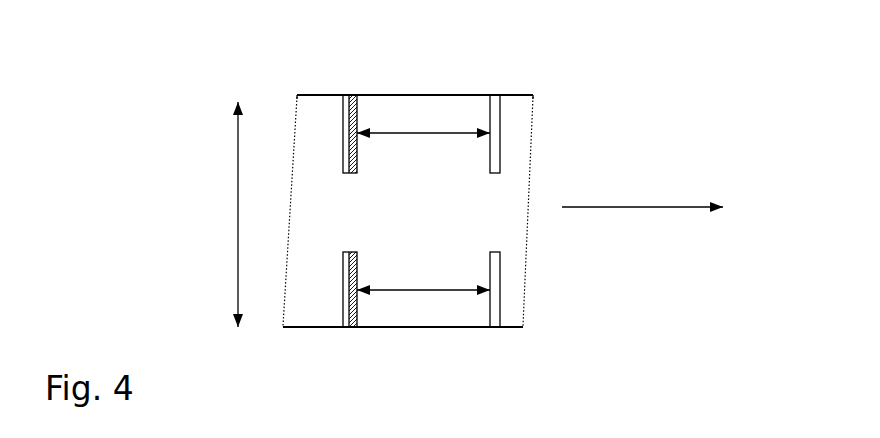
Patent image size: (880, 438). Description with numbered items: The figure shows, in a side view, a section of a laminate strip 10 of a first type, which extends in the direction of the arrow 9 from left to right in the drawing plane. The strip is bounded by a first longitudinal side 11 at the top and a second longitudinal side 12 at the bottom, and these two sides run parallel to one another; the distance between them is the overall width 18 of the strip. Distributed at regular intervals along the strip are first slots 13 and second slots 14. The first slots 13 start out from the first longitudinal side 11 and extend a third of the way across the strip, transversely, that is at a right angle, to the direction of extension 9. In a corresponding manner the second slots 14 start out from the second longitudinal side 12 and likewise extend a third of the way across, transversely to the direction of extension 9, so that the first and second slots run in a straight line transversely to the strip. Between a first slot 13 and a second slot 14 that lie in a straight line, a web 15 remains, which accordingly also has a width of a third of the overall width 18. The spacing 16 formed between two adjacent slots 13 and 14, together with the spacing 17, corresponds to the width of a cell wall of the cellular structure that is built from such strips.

The arrow indicating direction of extension 9 is at (663, 207).
The laminate strip of a first type 10 is at (604, 96).
The first longitudinal side 11 is at (425, 95).
The second longitudinal side 12 is at (417, 327).
The first slots 13 is at (351, 100).
The second slots 14 is at (352, 325).
The web 15 is at (350, 207).
The spacing between adjacent slots 16 is at (463, 135).
The spacing between adjacent slots 17 is at (443, 290).
The overall width 18 is at (238, 188).